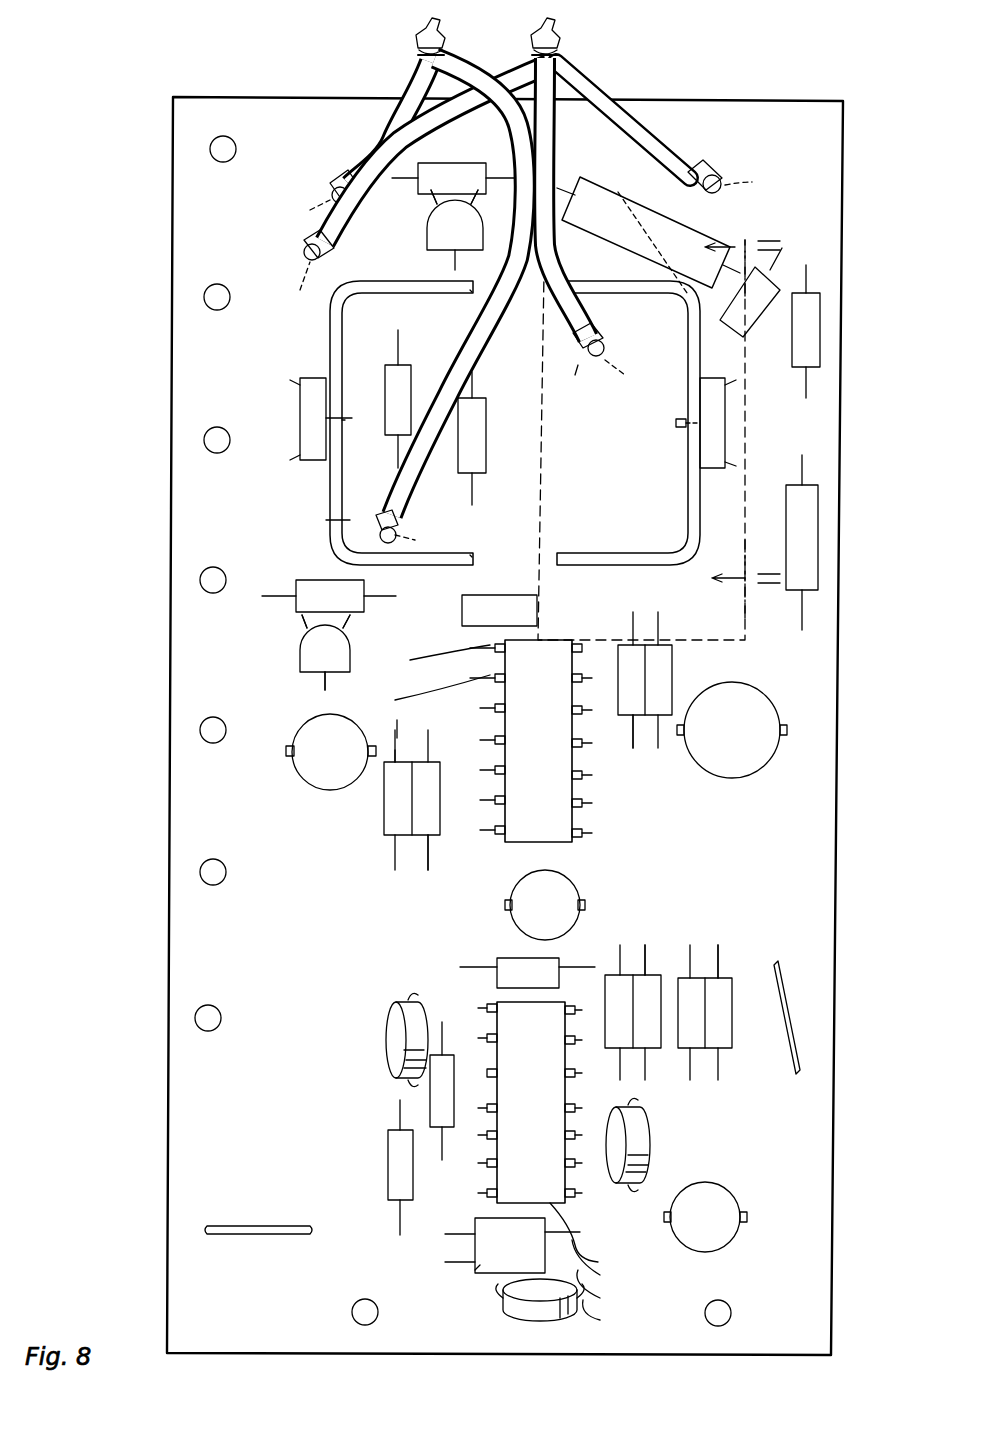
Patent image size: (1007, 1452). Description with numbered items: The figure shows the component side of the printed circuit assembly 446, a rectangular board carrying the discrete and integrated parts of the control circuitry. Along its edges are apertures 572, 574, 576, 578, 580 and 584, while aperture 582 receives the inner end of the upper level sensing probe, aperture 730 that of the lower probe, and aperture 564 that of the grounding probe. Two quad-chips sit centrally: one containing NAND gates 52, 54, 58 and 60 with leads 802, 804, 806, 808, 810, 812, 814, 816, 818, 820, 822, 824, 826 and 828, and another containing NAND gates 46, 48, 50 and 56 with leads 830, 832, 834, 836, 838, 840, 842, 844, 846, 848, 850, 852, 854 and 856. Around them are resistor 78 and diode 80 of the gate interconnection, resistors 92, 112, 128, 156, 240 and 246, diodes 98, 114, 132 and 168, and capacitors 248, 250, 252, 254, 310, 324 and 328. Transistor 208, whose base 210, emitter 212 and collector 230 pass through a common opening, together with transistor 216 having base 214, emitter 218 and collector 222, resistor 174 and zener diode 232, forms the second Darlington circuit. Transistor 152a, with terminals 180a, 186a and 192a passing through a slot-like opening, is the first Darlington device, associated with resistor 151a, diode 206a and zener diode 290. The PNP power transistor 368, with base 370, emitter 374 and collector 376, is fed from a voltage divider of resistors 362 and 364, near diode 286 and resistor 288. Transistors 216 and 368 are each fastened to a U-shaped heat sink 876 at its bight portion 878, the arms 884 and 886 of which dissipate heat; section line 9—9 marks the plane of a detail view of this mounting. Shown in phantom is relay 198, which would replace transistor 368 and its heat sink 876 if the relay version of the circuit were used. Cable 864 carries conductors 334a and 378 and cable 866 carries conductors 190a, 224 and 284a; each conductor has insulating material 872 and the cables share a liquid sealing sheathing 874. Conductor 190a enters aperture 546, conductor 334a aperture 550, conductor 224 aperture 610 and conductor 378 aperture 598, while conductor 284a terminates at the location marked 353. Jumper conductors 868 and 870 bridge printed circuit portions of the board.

The printed circuit assembly 446 is at (845, 942).
The mounting hole 572 is at (222, 137).
The mounting hole 574 is at (204, 296).
The mounting hole 576 is at (204, 438).
The mounting hole 578 is at (200, 578).
The mounting hole 580 is at (200, 728).
The aperture 582 is at (200, 870).
The mounting hole 584 is at (218, 1028).
The aperture 564 is at (352, 1312).
The aperture 730 is at (731, 1311).
The U-shaped heat sink 876 is at (340, 352).
The bight portion 878 is at (333, 405).
The arm of heat sink 886 is at (438, 283).
The arm of heat sink 884 is at (468, 556).
The diode 206a is at (455, 178).
The base terminal 180a is at (455, 262).
The emitter terminal 186a is at (432, 200).
The collector terminal 192a is at (476, 200).
The zener diode 290 is at (402, 400).
The resistor 151a is at (478, 430).
The second NPN transistor 216 is at (305, 465).
The emitter 218 is at (292, 380).
The base 214 is at (292, 458).
The collector 222 is at (350, 420).
The conductor means 224 is at (360, 522).
The PNP power transistor 368 is at (712, 475).
The base 370 is at (738, 383).
The emitter 374 is at (738, 466).
The collector 376 is at (676, 423).
The diode 286 is at (812, 357).
The resistor 288 is at (805, 560).
The resistor 364 is at (682, 265).
The resistor 362 is at (745, 310).
The relay assembly 198 is at (722, 645).
The section line 9— 9 is at (742, 420).
The conductor means 284a is at (718, 185).
The port 353 is at (761, 182).
The transistor 152a is at (518, 290).
The conductor means 334a is at (308, 245).
The conductor means 190a is at (332, 190).
The electrically insulating material 872 is at (342, 178).
The aperture 546 is at (300, 207).
The aperture 550 is at (313, 286).
The aperture 598 is at (638, 377).
The conductor means 378 is at (585, 358).
The aperture 610 is at (423, 544).
The cable means 864 is at (412, 45).
The cable means 866 is at (565, 45).
The liquid sealing sheathing 874 is at (445, 52).
The zener diode 232 is at (310, 592).
The series resistance means 174 is at (500, 605).
The first NPN transistor 208 is at (305, 660).
The emitter 212 is at (302, 628).
The collector 230 is at (350, 628).
The base electrode 210 is at (325, 676).
The capacitor 254 is at (320, 760).
The diode 132 is at (392, 800).
The resistor 128 is at (425, 820).
The electrical lead 816 is at (582, 646).
The electrical lead 802 is at (495, 648).
The electrical lead 804 is at (495, 678).
The electrical lead 806 is at (495, 708).
The electrical lead 808 is at (495, 740).
The electrical lead 810 is at (495, 770).
The electrical lead 812 is at (495, 800).
The electrical lead 814 is at (495, 830).
The electrical lead 818 is at (586, 672).
The electrical lead 820 is at (582, 710).
The electrical lead 822 is at (582, 743).
The electrical lead 824 is at (582, 775).
The electrical lead 826 is at (582, 803).
The electrical lead 828 is at (582, 833).
The NAND gate 52 is at (429, 661).
The NAND gate 54 is at (429, 689).
The NAND gate 58 is at (383, 719).
The NAND gate 60 is at (383, 744).
The diode 168 is at (660, 690).
The resistor 156 is at (632, 705).
The capacitor 310 is at (718, 757).
The capacitor 250 is at (565, 902).
The resistor 112 is at (510, 962).
The electrical lead 834 is at (490, 1072).
The electrical lead 830 is at (487, 1008).
The electrical lead 832 is at (487, 1038).
The electrical lead 836 is at (487, 1108).
The electrical lead 838 is at (487, 1135).
The electrical lead 840 is at (487, 1163).
The electrical lead 842 is at (487, 1193).
The electrical lead 844 is at (578, 1002).
The electrical lead 846 is at (575, 1040).
The electrical lead 848 is at (578, 1073).
The electrical lead 850 is at (575, 1108).
The electrical lead 852 is at (575, 1135).
The electrical lead 856 is at (575, 1163).
The electrical lead 854 is at (575, 1193).
The capacitor 324 is at (392, 1045).
The series resistor means 78 is at (392, 1162).
The diode means 80 is at (622, 985).
The resistor 240 is at (652, 985).
The resistor 92 is at (695, 990).
The diode 98 is at (722, 1000).
The jumper conductor 870 is at (792, 1035).
The capacitor 248 is at (640, 1138).
The jumper conductor 868 is at (278, 1236).
The diode 114 is at (475, 1240).
The resistor 246 is at (488, 1262).
The capacitor 252 is at (548, 1312).
The NAND gate 46 is at (593, 1232).
The NAND gate 48 is at (604, 1259).
The NAND gate 50 is at (606, 1286).
The NAND gate 56 is at (609, 1312).
The capacitor 328 is at (705, 1222).